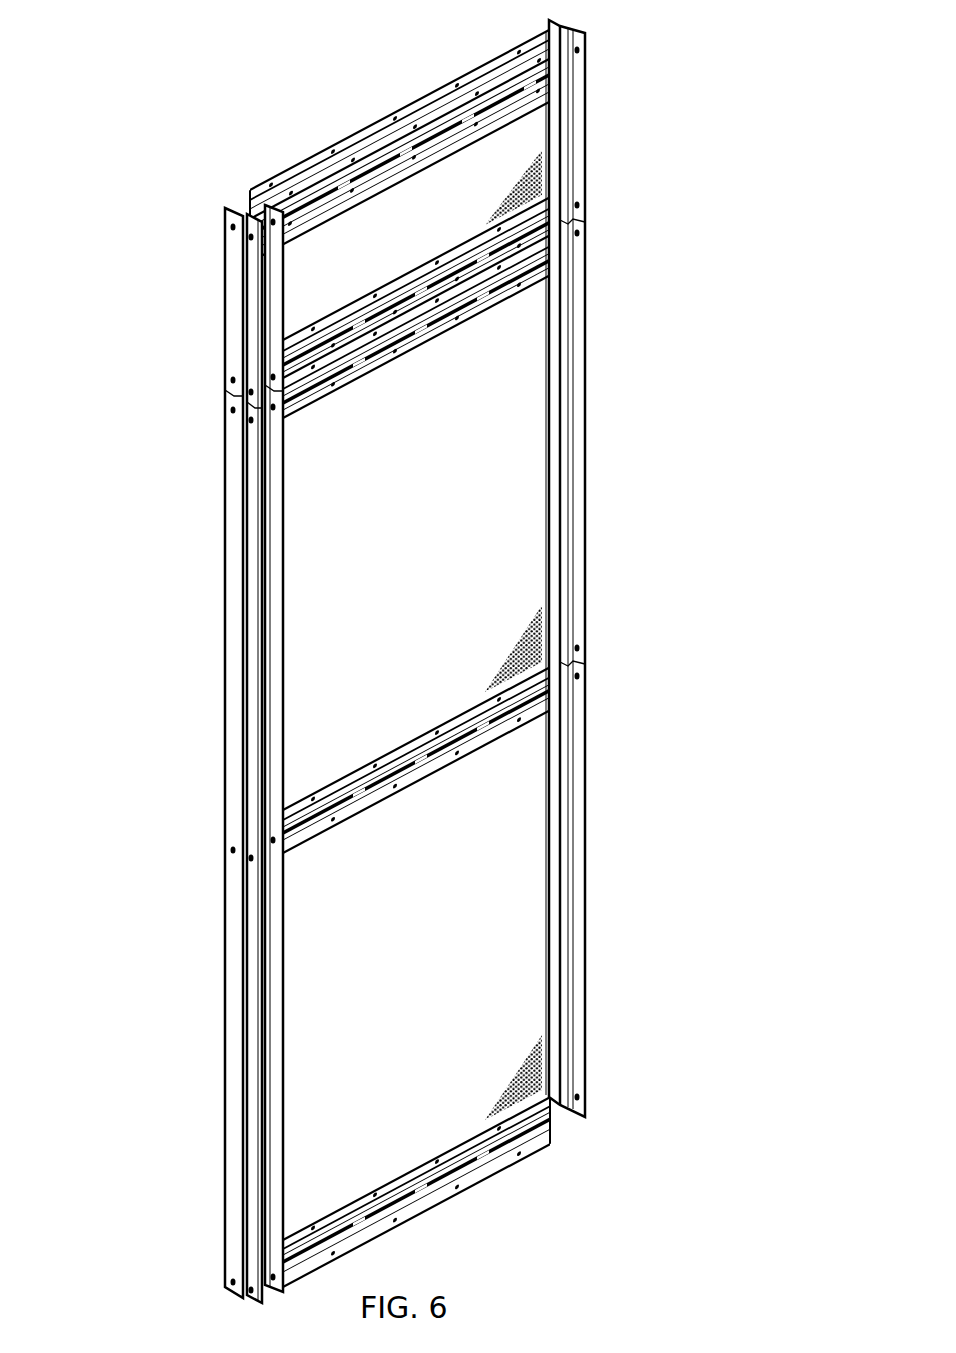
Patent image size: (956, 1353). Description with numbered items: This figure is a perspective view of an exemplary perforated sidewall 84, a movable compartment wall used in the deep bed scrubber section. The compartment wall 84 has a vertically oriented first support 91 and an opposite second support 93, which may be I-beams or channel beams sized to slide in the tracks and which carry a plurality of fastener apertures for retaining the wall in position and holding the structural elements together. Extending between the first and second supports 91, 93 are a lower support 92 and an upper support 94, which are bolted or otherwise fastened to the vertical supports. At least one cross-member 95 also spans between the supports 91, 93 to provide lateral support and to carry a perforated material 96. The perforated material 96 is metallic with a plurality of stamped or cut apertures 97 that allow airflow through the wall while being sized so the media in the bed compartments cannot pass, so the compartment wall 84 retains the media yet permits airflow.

The perforated sidewall 84 is at (118, 173).
The first support 91 is at (597, 90).
The lower support 92 is at (462, 1195).
The second support 93 is at (208, 803).
The upper support 94 is at (300, 152).
The cross-member 95 is at (410, 363).
The perforated material 96 is at (508, 132).
The apertures 97 is at (500, 1065).